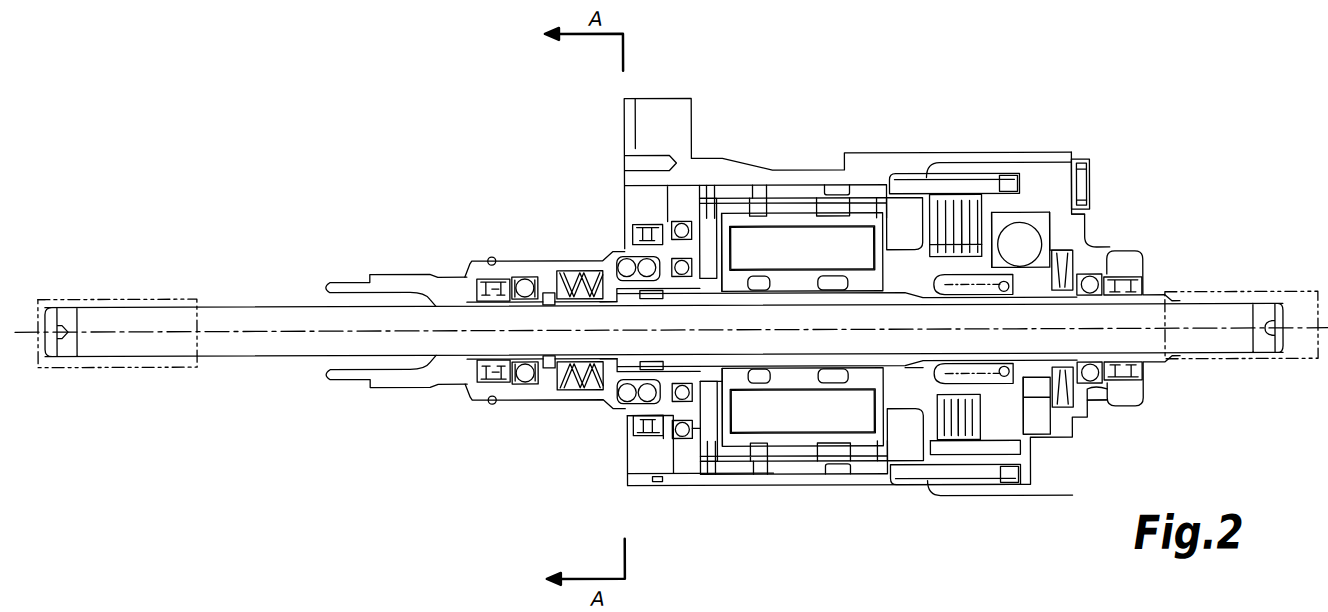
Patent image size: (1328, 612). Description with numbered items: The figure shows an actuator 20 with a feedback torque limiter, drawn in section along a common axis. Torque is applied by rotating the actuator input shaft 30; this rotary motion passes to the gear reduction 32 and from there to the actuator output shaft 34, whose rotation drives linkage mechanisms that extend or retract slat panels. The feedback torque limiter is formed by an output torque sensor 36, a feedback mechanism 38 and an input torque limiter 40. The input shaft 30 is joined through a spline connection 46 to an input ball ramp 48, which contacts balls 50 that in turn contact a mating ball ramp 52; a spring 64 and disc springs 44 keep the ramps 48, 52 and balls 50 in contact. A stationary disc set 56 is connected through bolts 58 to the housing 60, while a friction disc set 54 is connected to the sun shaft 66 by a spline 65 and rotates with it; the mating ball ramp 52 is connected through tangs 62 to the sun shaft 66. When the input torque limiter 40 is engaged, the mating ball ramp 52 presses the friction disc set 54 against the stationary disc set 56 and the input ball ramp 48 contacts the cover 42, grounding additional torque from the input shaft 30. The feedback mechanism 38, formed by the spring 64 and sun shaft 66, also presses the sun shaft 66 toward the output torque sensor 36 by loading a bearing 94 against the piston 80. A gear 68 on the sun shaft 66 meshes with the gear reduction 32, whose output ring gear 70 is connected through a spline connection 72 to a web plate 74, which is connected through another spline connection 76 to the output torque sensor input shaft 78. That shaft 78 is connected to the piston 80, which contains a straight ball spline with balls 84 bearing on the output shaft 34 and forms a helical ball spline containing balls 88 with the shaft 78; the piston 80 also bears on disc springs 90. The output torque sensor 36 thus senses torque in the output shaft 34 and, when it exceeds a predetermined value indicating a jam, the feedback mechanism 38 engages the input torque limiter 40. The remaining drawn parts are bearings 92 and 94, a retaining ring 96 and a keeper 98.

The actuator 20 is at (482, 176).
The actuator input shaft 30 is at (1165, 318).
The gear reduction 32 is at (745, 93).
The actuator output shaft 34 is at (478, 398).
The output torque sensor 36 is at (645, 90).
The feedback mechanism 38 is at (977, 388).
The input torque limiter 40 is at (957, 80).
The cover 42 is at (1072, 238).
The disc springs 44 is at (1072, 265).
The spline connection 46 is at (1105, 380).
The input ball ramp 48 is at (1110, 252).
The balls 50 is at (1022, 245).
The mating ball ramp 52 is at (1010, 225).
The friction disc set 54 is at (977, 210).
The stationary disc set 56 is at (942, 210).
The bolts 58 is at (1083, 182).
The housing 60 is at (900, 215).
The tangs 62 is at (992, 268).
The spring 64 is at (1007, 373).
The spline 65 is at (958, 395).
The sun shaft 66 is at (980, 388).
The gear 68 is at (918, 380).
The gear reduction output ring gear 70 is at (745, 196).
The spline connection 72 is at (693, 432).
The web plate 74 is at (712, 200).
The spline connection 76 is at (717, 382).
The output torque sensor input shaft 78 is at (660, 262).
The piston 80 is at (585, 385).
The balls 84 is at (645, 395).
The balls 88 is at (625, 268).
The disc springs 90 is at (545, 378).
The bearing 92 is at (697, 402).
The bearing 94 is at (612, 385).
The retaining ring 96 is at (712, 390).
The keeper 98 is at (720, 385).